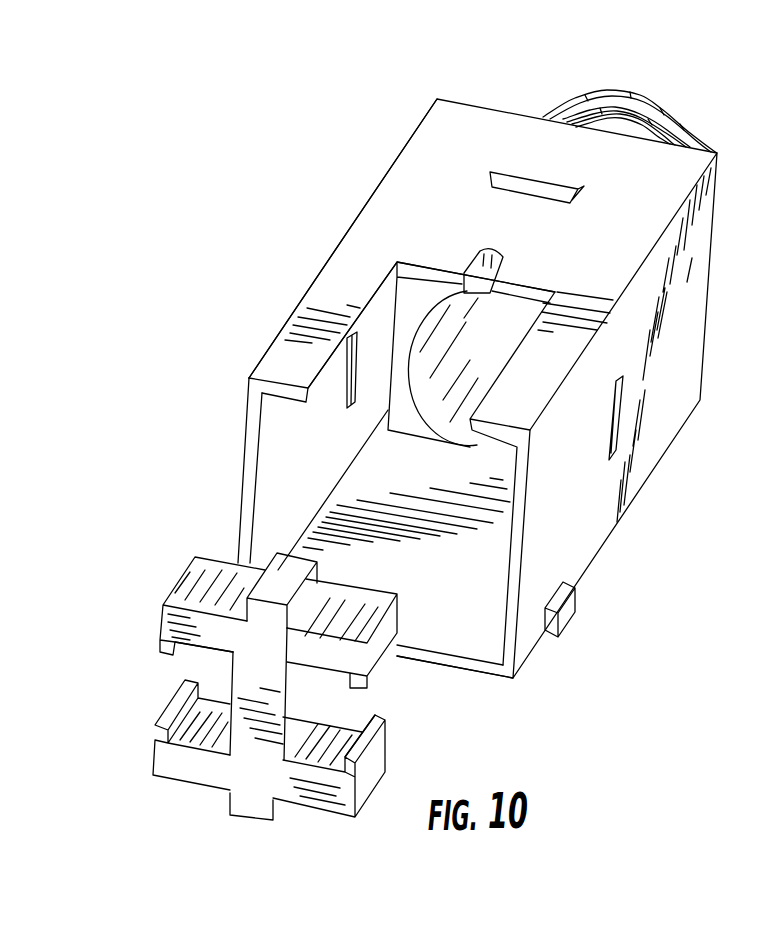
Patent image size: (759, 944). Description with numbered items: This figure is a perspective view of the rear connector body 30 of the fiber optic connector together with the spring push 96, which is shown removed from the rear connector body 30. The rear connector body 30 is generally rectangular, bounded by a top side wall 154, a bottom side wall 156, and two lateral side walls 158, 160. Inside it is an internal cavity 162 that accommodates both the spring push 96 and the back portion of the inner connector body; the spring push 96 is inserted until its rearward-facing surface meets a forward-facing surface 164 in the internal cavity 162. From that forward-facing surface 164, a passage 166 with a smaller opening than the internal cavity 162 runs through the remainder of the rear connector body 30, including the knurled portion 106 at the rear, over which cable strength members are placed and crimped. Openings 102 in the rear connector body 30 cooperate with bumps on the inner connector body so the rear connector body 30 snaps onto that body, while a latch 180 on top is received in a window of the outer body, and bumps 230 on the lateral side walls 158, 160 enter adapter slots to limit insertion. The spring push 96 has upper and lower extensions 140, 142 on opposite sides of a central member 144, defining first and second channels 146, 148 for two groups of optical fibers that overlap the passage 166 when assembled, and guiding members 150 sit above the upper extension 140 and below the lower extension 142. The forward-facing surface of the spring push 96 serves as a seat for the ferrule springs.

The rear connector body 30 is at (419, 114).
The spring push 96 is at (275, 679).
The openings 102 is at (620, 430).
The knurled portion 106 is at (598, 102).
The upper extension 140 is at (180, 580).
The lower extension 142 is at (177, 782).
The central member 144 is at (285, 715).
The first channel 146 is at (207, 664).
The second channel 148 is at (333, 706).
The guiding members 150 is at (270, 566).
The top side wall 154 is at (402, 165).
The bottom side wall 156 is at (480, 679).
The lateral side wall 158 is at (243, 446).
The lateral side wall 160 is at (600, 532).
The internal cavity 162 is at (337, 424).
The forward-facing surface 164 is at (425, 291).
The passage 166 is at (460, 356).
The latch 180 is at (500, 170).
The bumps 230 is at (570, 620).